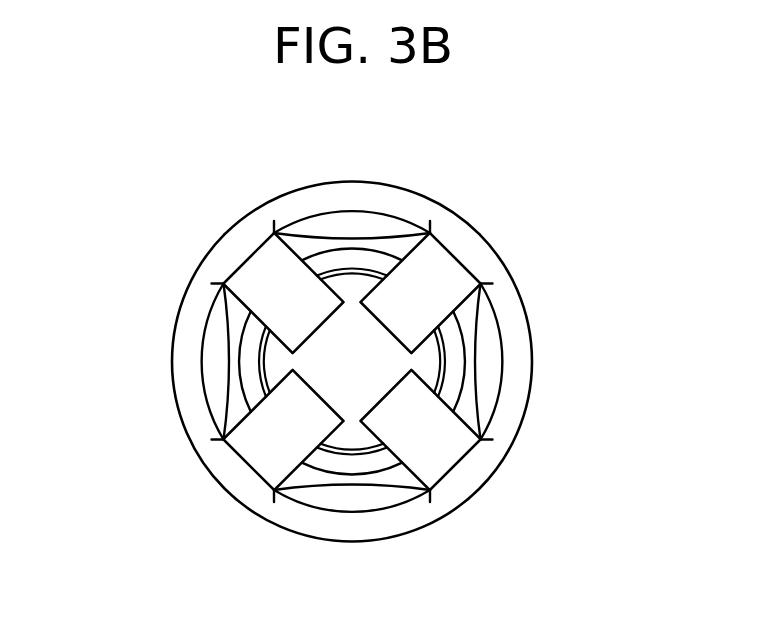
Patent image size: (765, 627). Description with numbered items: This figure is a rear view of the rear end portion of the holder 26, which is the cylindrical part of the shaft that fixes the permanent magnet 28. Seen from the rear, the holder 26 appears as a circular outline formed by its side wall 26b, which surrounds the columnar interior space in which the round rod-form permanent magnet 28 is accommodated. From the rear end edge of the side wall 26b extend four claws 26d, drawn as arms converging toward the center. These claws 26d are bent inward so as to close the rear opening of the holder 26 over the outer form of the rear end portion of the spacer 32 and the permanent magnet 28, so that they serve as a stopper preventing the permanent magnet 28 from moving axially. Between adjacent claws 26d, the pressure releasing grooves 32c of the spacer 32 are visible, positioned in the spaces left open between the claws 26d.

The holder 26 is at (294, 538).
The side wall 26b is at (378, 201).
The claws 26d is at (428, 283).
The permanent magnet 28 is at (404, 360).
The spacer 32 is at (298, 242).
The pressure releasing grooves 32c is at (228, 366).